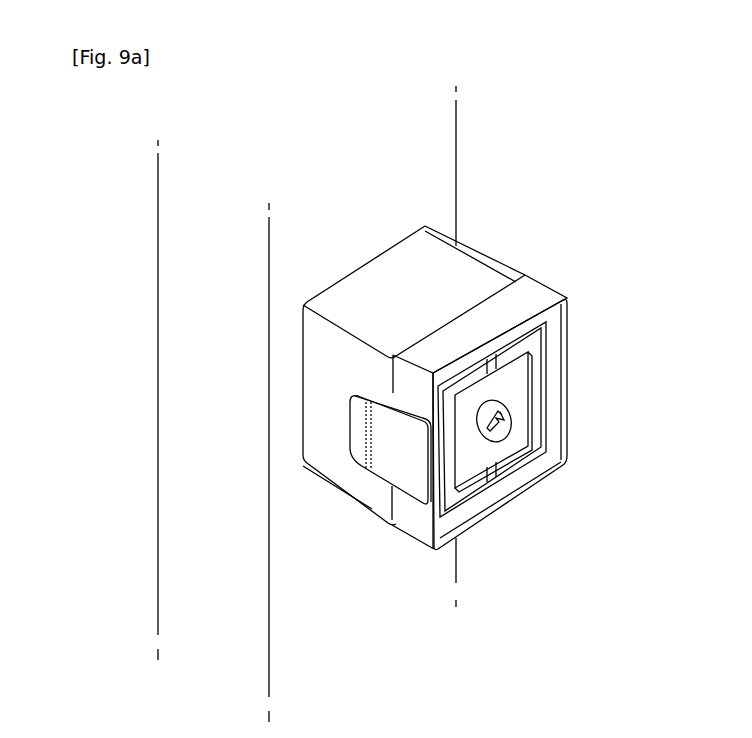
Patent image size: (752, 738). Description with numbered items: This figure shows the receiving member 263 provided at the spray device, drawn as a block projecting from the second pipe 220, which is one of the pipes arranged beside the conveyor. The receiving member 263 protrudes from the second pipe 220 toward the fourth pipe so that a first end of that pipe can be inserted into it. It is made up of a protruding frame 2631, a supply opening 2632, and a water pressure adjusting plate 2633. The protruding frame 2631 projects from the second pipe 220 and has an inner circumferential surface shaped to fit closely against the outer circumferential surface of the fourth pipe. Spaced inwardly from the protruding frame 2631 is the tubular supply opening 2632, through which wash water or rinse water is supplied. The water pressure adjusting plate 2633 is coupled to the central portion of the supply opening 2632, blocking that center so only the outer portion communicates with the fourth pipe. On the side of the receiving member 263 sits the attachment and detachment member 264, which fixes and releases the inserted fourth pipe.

The second pipe 220 is at (222, 472).
The receiving member 263 is at (555, 266).
The protruding frame 2631 is at (570, 317).
The supply opening 2632 is at (523, 468).
The water pressure adjusting plate 2633 is at (520, 426).
The attachment and detachment member 264 is at (392, 466).